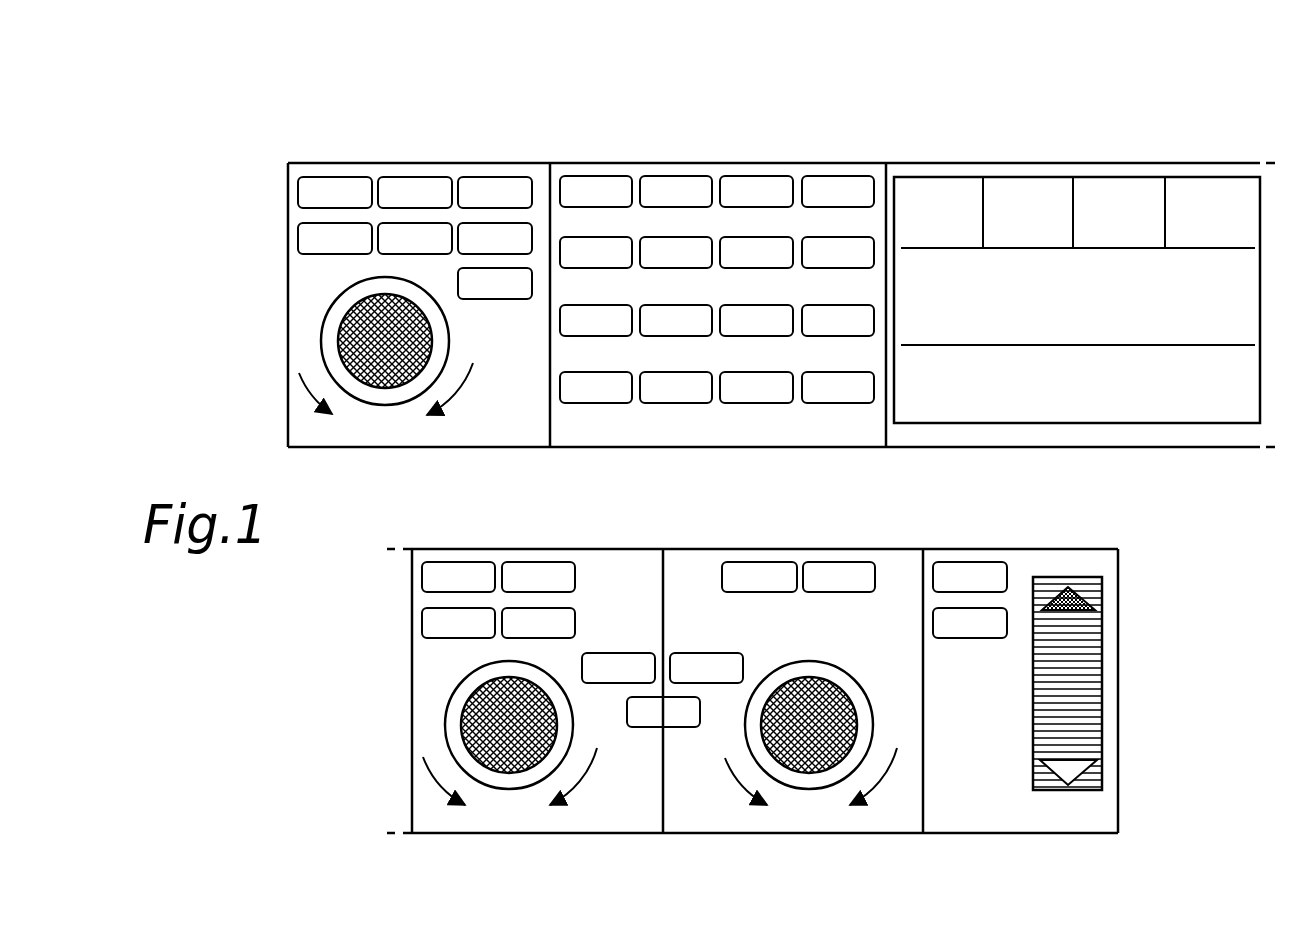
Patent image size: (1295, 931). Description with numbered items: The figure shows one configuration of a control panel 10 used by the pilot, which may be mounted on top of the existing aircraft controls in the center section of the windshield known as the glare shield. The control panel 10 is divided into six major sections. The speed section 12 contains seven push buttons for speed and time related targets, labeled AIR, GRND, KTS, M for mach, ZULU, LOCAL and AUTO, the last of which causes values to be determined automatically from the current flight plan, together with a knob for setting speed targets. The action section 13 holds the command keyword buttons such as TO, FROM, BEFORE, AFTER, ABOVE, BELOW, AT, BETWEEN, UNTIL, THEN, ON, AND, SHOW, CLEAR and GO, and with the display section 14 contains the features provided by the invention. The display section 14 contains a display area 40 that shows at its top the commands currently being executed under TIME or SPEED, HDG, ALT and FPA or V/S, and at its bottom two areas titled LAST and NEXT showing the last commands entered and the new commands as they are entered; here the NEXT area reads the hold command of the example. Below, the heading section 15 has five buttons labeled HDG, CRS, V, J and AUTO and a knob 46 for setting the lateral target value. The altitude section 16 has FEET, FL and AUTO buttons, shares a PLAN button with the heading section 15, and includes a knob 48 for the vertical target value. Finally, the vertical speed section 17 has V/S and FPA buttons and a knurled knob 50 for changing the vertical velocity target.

The control panel 10 is at (590, 70).
The speed section 12 is at (412, 163).
The action section 13 is at (663, 163).
The display section 14 is at (926, 163).
The display area 40 is at (1052, 177).
The heading section 15 is at (551, 549).
The altitude section 16 is at (795, 549).
The vertical speed section 17 is at (1017, 549).
The knob 46 is at (550, 673).
The knob 48 is at (847, 672).
The knurled knob 50 is at (1033, 668).